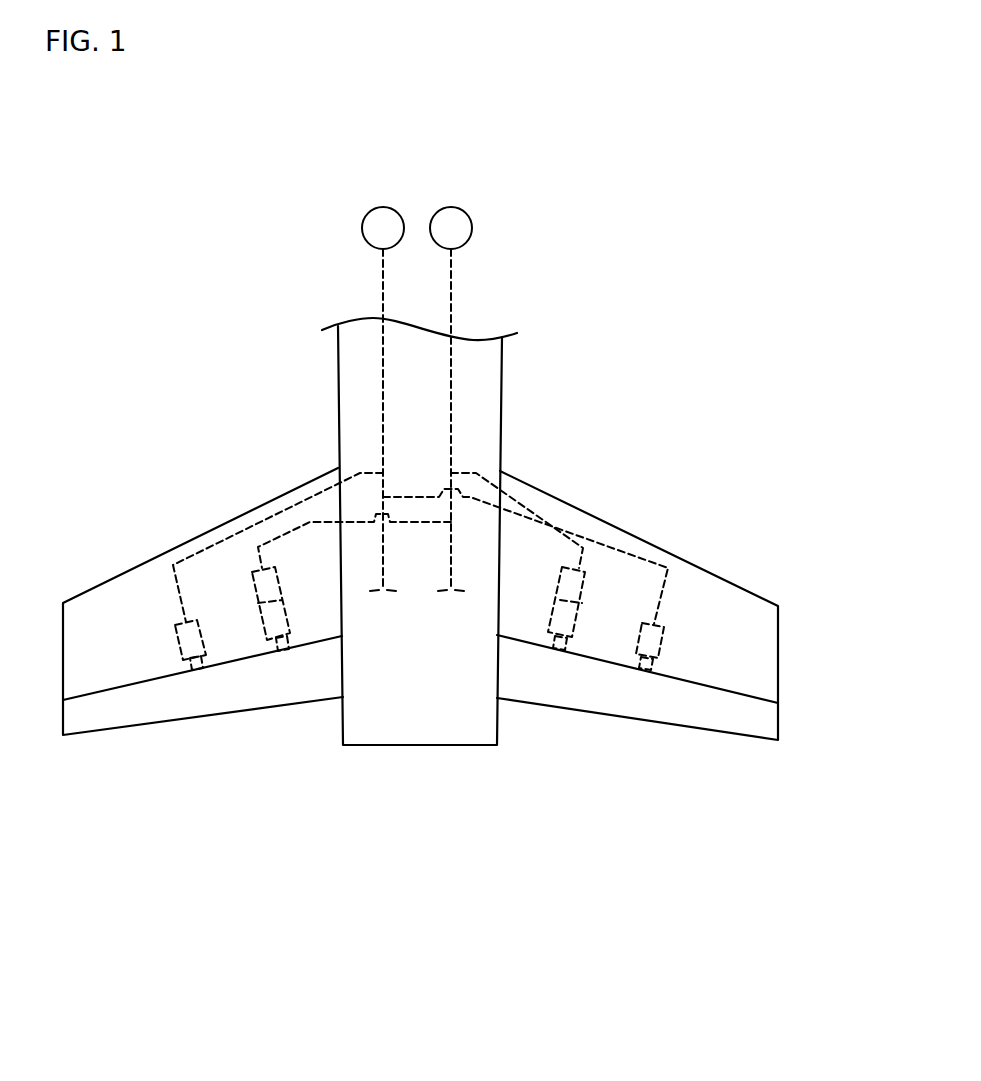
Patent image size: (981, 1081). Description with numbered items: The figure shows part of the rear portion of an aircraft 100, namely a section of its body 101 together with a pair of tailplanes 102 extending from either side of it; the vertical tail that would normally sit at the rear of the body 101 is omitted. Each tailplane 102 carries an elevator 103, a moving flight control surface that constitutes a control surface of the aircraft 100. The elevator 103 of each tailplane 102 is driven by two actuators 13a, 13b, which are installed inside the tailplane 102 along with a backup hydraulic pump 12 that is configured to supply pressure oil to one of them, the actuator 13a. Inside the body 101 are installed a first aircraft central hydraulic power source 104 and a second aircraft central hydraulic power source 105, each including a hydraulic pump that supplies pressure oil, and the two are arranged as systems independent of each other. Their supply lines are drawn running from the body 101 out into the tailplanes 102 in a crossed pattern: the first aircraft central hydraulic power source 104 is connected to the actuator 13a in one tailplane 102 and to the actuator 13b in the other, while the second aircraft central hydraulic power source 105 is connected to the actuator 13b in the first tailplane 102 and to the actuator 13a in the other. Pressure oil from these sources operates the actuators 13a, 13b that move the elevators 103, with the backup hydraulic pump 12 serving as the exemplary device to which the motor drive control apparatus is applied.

The aircraft 100 is at (518, 372).
The body 101 is at (485, 428).
The tailplane 102 is at (150, 590).
The elevator 103 is at (177, 708).
The first aircraft central hydraulic power source 104 is at (362, 229).
The second aircraft central hydraulic power source 105 is at (471, 223).
The backup hydraulic pump 12 is at (253, 590).
The actuator 13a is at (267, 627).
The actuator 13b is at (175, 640).